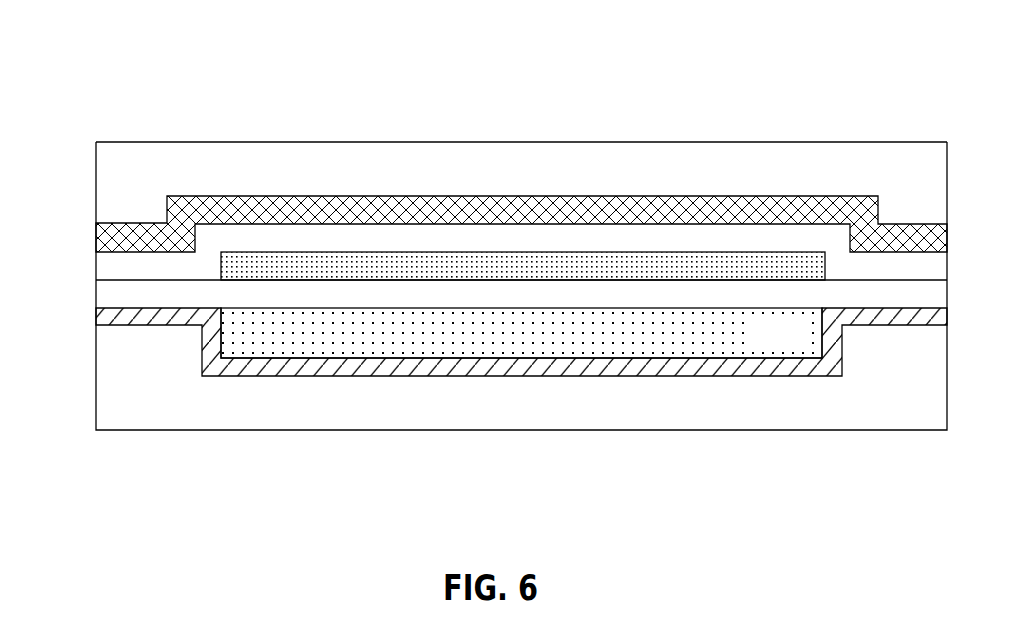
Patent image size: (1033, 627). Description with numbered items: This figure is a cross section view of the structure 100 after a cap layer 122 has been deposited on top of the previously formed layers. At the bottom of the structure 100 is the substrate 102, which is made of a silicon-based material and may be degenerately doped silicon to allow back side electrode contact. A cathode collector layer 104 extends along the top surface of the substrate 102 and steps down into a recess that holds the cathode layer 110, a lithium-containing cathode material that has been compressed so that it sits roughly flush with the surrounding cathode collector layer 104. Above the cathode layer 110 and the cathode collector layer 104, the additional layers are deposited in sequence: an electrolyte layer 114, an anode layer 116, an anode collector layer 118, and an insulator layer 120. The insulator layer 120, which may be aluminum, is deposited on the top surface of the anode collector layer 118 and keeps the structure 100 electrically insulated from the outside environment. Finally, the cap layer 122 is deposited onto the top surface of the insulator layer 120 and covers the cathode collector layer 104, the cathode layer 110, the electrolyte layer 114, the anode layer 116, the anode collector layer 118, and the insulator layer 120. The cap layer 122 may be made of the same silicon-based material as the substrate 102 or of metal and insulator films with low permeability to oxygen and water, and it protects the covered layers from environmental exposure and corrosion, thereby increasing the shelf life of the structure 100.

The structure 100 is at (150, 97).
The substrate 102 is at (936, 418).
The cathode collector layer 104 is at (112, 316).
The cathode layer 110 is at (801, 343).
The electrolyte layer 114 is at (946, 305).
The anode layer 116 is at (381, 270).
The anode collector layer 118 is at (469, 235).
The insulator layer 120 is at (115, 235).
The cap layer 122 is at (936, 183).